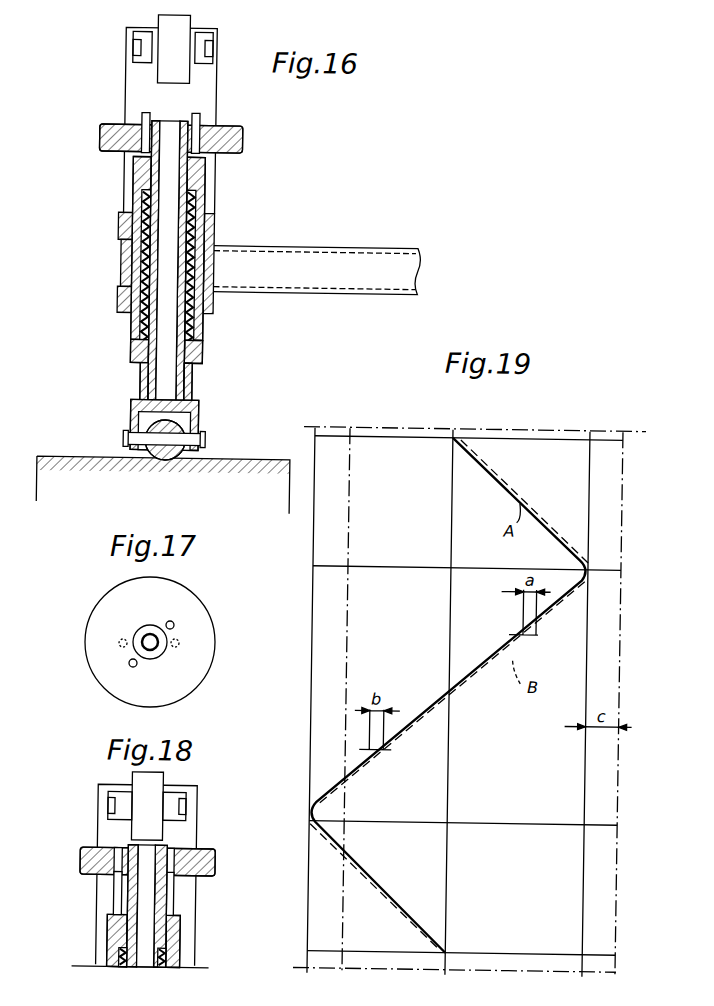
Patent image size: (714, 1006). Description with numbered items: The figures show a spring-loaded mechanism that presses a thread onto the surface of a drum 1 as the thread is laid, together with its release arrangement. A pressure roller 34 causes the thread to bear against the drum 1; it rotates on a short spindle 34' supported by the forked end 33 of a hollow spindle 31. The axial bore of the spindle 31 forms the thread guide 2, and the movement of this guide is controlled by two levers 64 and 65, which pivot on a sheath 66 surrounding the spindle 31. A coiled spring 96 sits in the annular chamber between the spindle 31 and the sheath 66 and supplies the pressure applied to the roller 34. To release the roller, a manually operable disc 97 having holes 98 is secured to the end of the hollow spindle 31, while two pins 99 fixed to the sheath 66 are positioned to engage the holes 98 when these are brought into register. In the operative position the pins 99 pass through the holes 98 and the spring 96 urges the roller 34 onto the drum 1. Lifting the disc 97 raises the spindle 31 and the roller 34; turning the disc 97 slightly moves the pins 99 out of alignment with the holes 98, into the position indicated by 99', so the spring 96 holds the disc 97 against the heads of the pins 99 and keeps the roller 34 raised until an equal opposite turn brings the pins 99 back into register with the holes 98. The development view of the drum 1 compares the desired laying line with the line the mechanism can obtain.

In FIG. 16, the drum 1 is at (265, 458).
In FIG. 19, the drum 1 is at (311, 609).
In FIG. 16, the thread guide 2 is at (183, 180).
In FIG. 16, the spindle 31 is at (151, 178).
In FIG. 18, the spindle 31 is at (160, 905).
In FIG. 16, the forked end 33 is at (134, 410).
In FIG. 16, the pressure roller 34 is at (186, 431).
In FIG. 16, the spindle 34' is at (167, 481).
In FIG. 16, the lever 64 is at (119, 300).
In FIG. 16, the lever 65 is at (317, 289).
In FIG. 16, the sheath 66 is at (199, 210).
In FIG. 18, the sheath 66 is at (181, 935).
In FIG. 16, the coiled spring 96 is at (140, 328).
In FIG. 18, the coiled spring 96 is at (112, 956).
In FIG. 16, the manually operable disc 97 is at (242, 141).
In FIG. 17, the manually operable disc 97 is at (188, 686).
In FIG. 18, the manually operable disc 97 is at (214, 862).
In FIG. 17, the holes 98 is at (174, 625).
In FIG. 16, the pins 99 is at (170, 121).
In FIG. 18, the pins 99 is at (112, 881).
In FIG. 17, the displaced pin position 99' is at (150, 651).